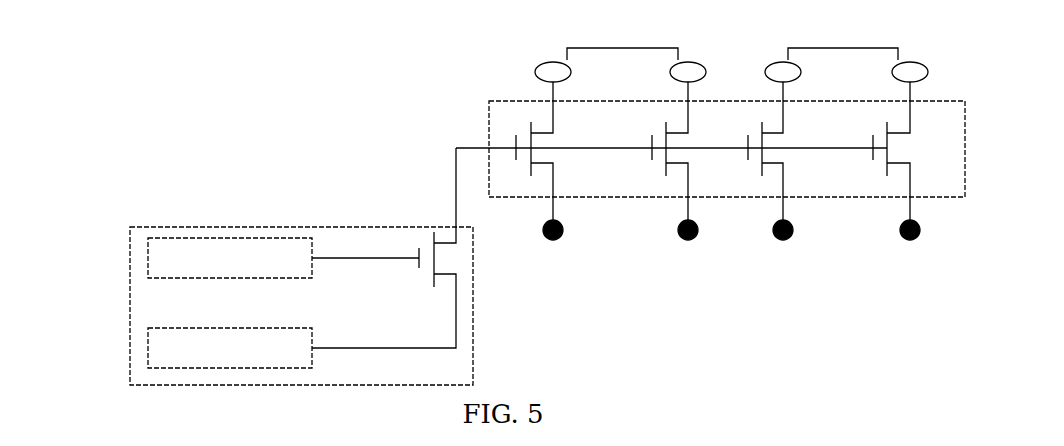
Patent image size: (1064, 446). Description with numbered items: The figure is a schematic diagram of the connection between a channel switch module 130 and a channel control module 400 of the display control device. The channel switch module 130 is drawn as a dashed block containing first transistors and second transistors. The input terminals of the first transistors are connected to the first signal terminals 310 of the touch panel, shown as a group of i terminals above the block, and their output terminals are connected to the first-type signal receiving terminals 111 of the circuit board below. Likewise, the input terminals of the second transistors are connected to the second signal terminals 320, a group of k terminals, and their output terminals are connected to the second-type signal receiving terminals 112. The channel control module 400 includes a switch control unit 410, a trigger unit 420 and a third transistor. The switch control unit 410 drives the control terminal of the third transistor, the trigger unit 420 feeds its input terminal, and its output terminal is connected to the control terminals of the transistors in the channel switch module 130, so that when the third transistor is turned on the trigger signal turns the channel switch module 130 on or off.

The channel control module 400 is at (130, 303).
The switch control unit 410 is at (230, 258).
The trigger unit 420 is at (230, 348).
The channel switch module 130 is at (489, 133).
The first signal terminals 310 is at (545, 66).
The second signal terminals 320 is at (775, 62).
The first-type signal receiving terminals 111 is at (543, 229).
The second-type signal receiving terminals 112 is at (773, 229).